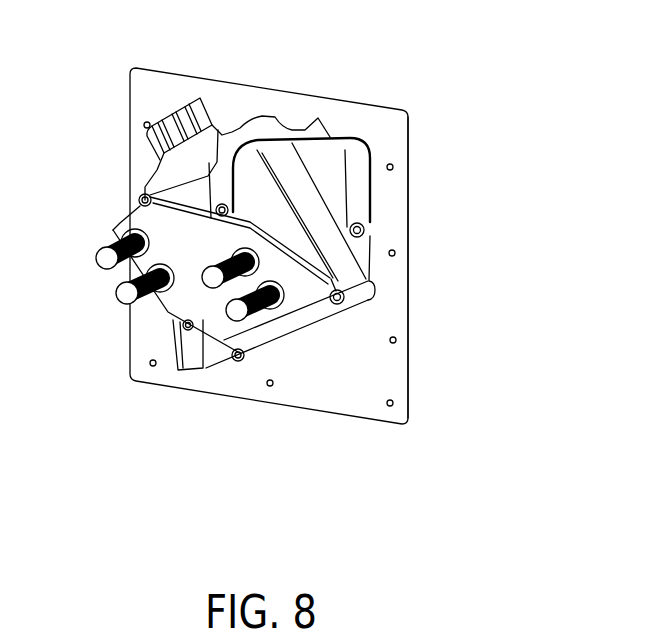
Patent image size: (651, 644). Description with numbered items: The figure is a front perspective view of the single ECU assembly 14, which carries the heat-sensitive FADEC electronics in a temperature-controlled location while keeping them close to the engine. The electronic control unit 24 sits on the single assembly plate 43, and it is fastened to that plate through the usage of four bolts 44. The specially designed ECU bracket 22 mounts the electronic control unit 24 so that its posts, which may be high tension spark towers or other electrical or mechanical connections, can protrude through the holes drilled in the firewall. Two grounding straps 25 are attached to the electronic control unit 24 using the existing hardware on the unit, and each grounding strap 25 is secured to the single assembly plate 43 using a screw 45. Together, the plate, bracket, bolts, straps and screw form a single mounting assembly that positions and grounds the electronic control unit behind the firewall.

The single ECU assembly 14 is at (247, 409).
The ECU bracket 22 is at (115, 300).
The electronic control unit 24 is at (218, 126).
The grounding strap 25 is at (307, 130).
The single assembly plate 43 is at (408, 317).
The AN4-15 bolt 44 is at (344, 292).
The screw 45 is at (378, 212).